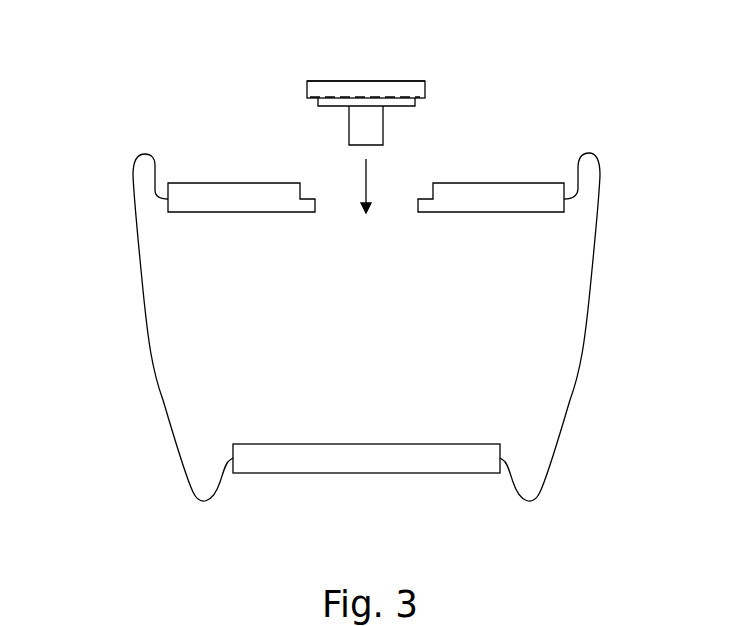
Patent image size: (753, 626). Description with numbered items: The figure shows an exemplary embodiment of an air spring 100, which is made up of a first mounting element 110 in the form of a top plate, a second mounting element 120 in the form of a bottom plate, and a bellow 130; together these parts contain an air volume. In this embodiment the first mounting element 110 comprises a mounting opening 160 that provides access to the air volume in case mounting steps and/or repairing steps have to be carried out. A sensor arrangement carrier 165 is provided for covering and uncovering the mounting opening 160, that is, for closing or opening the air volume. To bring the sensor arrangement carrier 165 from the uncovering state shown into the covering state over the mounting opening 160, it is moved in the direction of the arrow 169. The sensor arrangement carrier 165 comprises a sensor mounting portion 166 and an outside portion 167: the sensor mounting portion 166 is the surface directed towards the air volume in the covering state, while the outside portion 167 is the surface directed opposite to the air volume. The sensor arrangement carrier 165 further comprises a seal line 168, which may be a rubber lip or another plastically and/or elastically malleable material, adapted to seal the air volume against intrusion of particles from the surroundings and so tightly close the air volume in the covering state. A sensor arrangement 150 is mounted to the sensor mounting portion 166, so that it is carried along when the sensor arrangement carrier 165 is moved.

The air spring 100 is at (135, 310).
The first mounting element 110 is at (195, 192).
The second mounting element 120 is at (423, 473).
The bellow 130 is at (593, 272).
The sensor arrangement 150 is at (367, 128).
The mounting opening 160 is at (403, 213).
The sensor arrangement carrier 165 is at (400, 81).
The sensor mounting portion 166 is at (329, 105).
The outside portion 167 is at (323, 81).
The seal line 168 is at (355, 97).
The arrow 169 is at (365, 192).